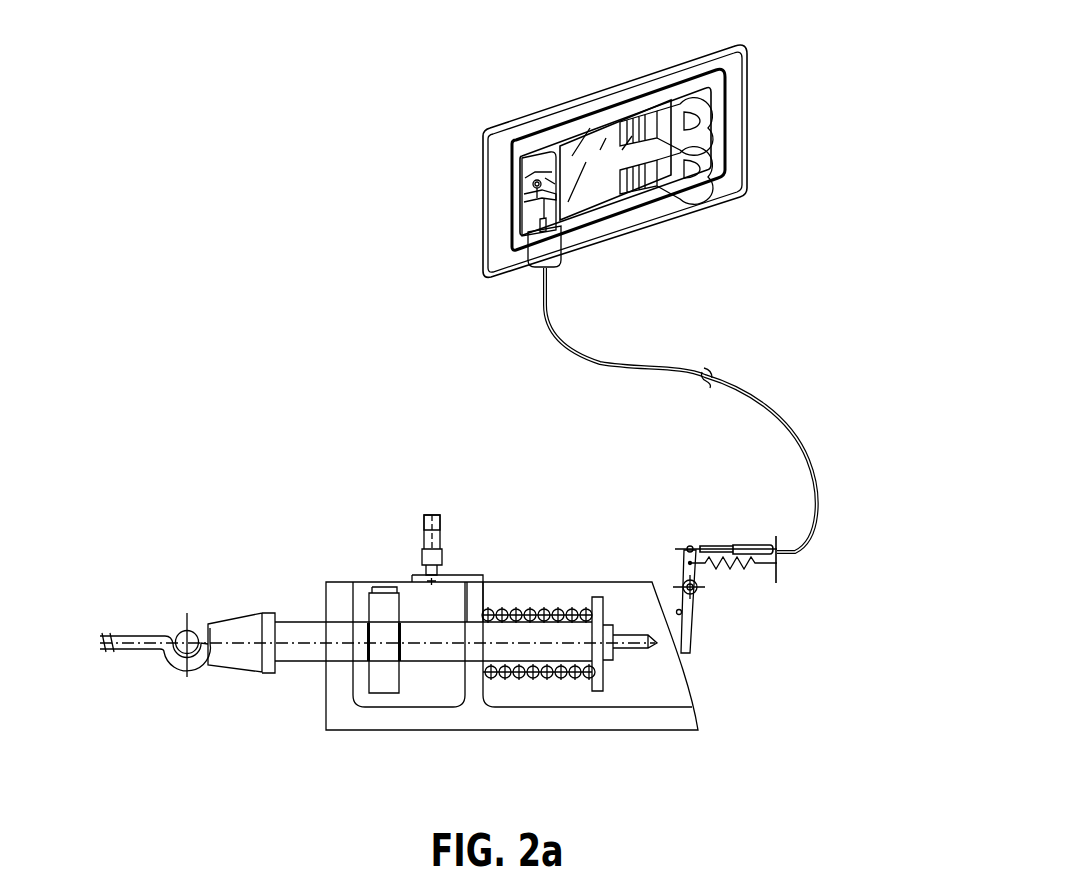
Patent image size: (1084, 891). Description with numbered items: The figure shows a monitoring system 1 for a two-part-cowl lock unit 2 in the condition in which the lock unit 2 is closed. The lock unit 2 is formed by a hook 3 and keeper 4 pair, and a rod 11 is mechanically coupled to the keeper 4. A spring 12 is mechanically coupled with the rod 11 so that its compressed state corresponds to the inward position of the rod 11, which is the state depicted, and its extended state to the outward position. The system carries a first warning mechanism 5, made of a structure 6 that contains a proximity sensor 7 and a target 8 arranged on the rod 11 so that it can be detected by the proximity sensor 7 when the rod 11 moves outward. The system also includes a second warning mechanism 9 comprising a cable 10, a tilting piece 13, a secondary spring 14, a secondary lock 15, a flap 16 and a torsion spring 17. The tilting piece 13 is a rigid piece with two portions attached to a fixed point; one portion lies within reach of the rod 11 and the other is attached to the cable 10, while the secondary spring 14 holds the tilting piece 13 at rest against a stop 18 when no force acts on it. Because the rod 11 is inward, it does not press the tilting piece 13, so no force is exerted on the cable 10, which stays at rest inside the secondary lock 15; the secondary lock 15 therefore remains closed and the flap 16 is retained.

The monitoring system 1 is at (292, 563).
The lock unit 2 is at (172, 624).
The hook 3 is at (172, 667).
The keeper 4 is at (237, 657).
The first warning mechanism 5 is at (417, 519).
The structure 6 is at (465, 576).
The proximity sensor 7 is at (436, 533).
The target 8 is at (382, 588).
The second warning mechanism 9 is at (745, 612).
The cable 10 is at (645, 362).
The rod 11 is at (452, 655).
The spring 12 is at (552, 677).
The tilting piece 13 is at (687, 627).
The secondary spring 14 is at (740, 568).
The secondary lock 15 is at (543, 246).
The flap 16 is at (595, 142).
The torsion spring 17 is at (673, 160).
The stop 18 is at (677, 610).